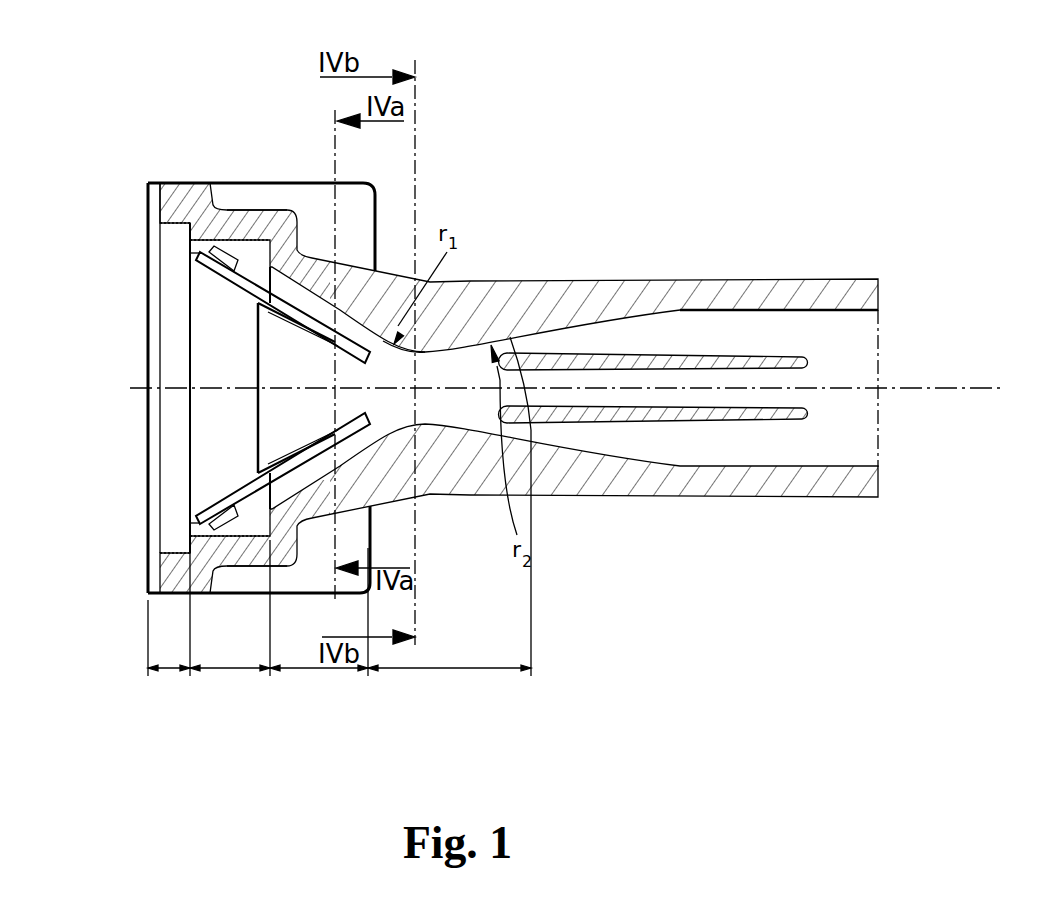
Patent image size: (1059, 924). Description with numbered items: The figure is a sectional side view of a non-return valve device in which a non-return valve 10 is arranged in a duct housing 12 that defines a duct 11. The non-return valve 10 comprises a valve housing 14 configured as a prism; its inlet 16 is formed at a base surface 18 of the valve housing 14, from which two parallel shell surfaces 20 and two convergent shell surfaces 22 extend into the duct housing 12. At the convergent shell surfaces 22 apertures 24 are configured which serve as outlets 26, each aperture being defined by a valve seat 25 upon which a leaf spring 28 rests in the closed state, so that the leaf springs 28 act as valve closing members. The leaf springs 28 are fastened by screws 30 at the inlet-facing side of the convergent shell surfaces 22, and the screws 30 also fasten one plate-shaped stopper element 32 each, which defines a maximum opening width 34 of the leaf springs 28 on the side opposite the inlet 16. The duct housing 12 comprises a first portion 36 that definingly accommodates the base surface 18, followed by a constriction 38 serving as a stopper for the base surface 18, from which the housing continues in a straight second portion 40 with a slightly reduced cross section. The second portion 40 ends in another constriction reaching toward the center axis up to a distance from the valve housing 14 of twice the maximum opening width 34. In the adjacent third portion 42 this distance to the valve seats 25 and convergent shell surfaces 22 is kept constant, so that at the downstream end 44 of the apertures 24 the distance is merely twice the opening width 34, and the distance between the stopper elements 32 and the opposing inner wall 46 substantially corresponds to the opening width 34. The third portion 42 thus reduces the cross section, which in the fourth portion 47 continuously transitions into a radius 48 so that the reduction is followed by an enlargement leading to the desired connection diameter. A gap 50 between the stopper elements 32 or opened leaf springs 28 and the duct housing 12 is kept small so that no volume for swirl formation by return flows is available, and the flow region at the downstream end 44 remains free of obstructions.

The non-return valve 10 is at (208, 430).
The duct 11 is at (565, 372).
The duct housing 12 is at (386, 472).
The valve housing 14 is at (262, 472).
The inlet 16 is at (138, 345).
The base surface 18 is at (177, 237).
The parallel shell surfaces 20 is at (198, 322).
The convergent shell surfaces 22 is at (215, 512).
The apertures 24 is at (350, 312).
The valve seat 25 is at (351, 495).
The outlets 26 is at (412, 448).
The leaf spring 28 is at (263, 502).
The screws 30 is at (238, 235).
The stopper element 32 is at (358, 357).
The maximum opening width 34 is at (462, 432).
The first portion 36 is at (169, 625).
The constriction 38 is at (198, 235).
The second portion 40 is at (230, 620).
The third portion 42 is at (319, 624).
The downstream end 44 is at (370, 326).
The inner wall 46 is at (528, 450).
The fourth portion 47 is at (449, 683).
The radius 48 is at (423, 348).
The gap 50 is at (376, 208).